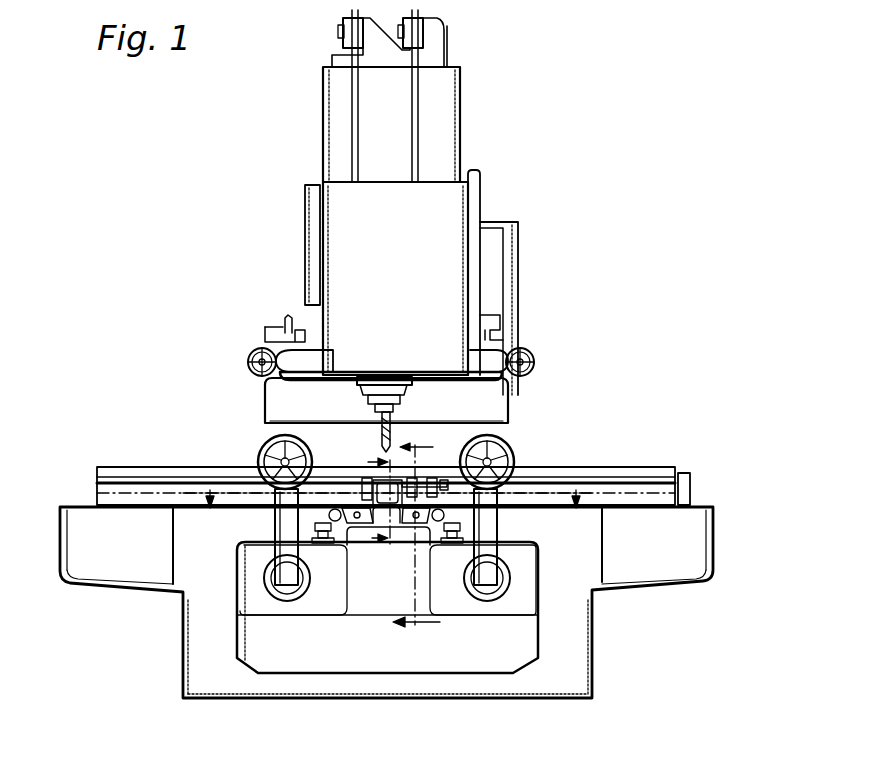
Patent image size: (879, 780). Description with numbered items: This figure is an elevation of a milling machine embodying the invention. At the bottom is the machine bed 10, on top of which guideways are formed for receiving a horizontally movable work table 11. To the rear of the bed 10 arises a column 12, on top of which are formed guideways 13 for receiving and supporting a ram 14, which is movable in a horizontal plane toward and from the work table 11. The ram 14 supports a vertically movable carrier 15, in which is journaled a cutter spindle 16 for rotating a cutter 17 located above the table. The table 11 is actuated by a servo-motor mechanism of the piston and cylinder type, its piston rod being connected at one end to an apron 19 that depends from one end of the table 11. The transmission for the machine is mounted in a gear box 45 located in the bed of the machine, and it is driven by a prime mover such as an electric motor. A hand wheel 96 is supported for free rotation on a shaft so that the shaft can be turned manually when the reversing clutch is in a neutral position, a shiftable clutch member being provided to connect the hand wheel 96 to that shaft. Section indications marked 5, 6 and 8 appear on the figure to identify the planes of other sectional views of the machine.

The ram 14 is at (458, 138).
The carrier 15 is at (445, 213).
The guideways 13 is at (290, 317).
The column 12 is at (503, 430).
The cutter spindle 16 is at (408, 390).
The cutter 17 is at (381, 430).
The work table 11 is at (660, 468).
The apron 19 is at (690, 487).
The hand wheel 96 is at (513, 453).
The gear box 45 is at (523, 592).
The machine bed 10 is at (593, 627).
The section line 6 is at (416, 539).
The section line 8 is at (368, 504).
The section line 5 is at (387, 512).